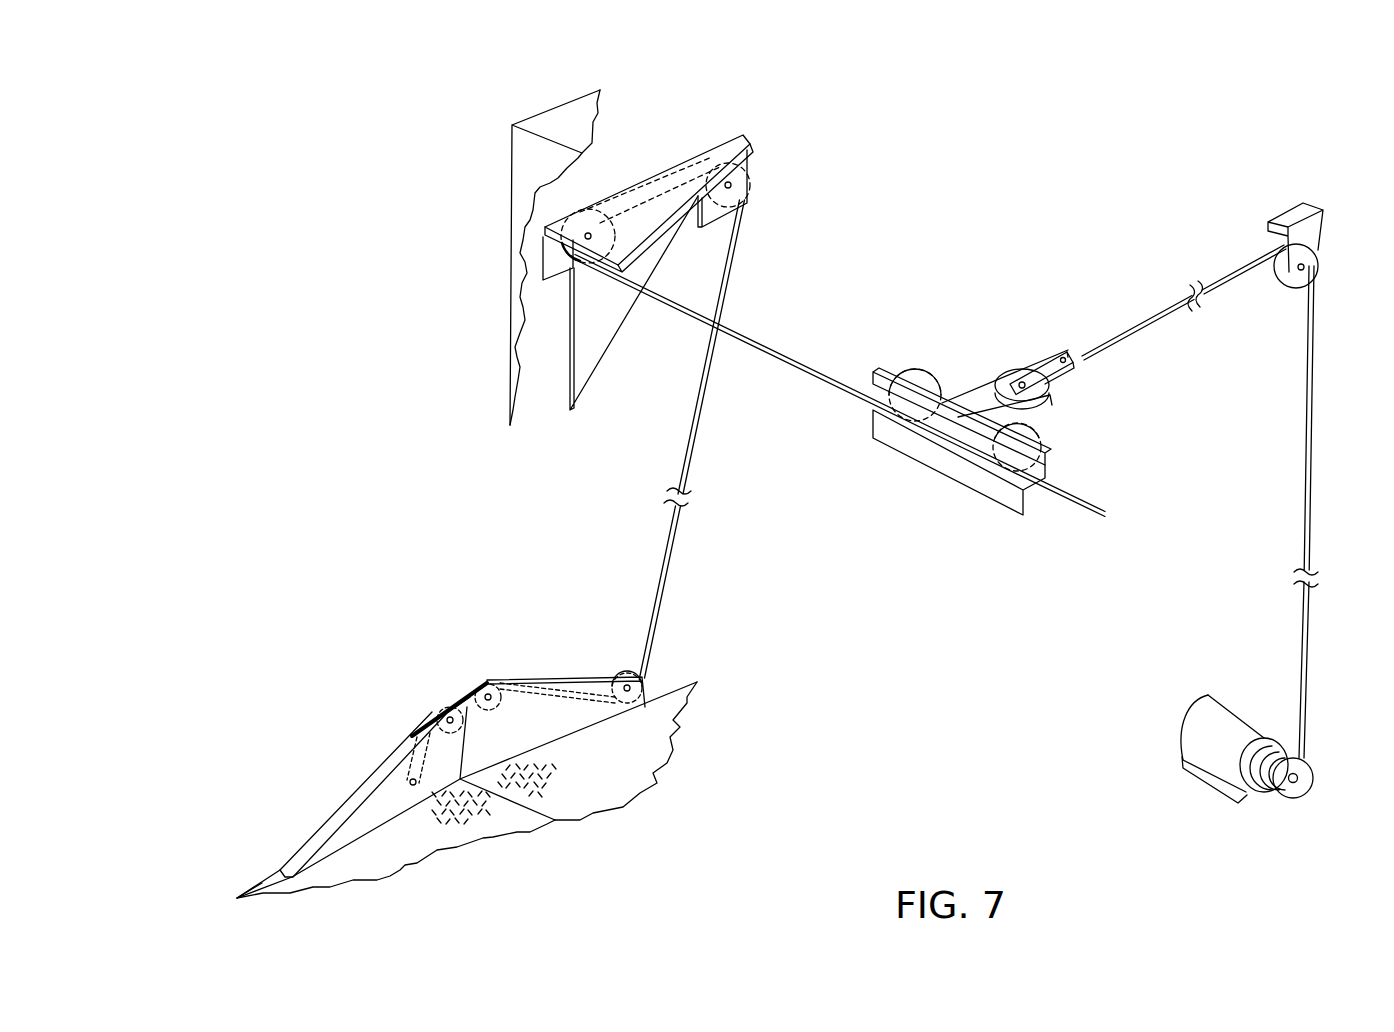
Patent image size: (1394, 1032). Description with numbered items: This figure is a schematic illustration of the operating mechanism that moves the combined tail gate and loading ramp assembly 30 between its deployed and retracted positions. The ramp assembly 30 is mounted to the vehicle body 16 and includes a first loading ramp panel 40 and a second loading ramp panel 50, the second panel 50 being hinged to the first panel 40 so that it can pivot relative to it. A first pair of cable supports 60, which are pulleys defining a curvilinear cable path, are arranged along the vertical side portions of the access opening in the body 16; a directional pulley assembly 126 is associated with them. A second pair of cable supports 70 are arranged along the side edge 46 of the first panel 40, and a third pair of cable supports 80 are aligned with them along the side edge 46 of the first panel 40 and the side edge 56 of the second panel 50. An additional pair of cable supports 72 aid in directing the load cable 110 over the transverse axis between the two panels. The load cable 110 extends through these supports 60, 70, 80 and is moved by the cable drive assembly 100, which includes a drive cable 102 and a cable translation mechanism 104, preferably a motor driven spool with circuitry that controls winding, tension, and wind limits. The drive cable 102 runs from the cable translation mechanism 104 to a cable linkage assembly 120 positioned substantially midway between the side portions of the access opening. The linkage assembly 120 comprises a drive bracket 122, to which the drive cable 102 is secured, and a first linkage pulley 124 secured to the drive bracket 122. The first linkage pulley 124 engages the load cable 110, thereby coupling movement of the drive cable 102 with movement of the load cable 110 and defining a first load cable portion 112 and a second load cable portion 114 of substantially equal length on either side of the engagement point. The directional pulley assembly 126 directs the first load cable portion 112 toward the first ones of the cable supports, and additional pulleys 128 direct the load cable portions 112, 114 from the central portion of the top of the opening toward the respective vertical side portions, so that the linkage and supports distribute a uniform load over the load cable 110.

The vehicle body 16 is at (512, 125).
The loading ramp assembly 30 is at (463, 763).
The first loading ramp panel 40 is at (653, 770).
The first side edge 46 is at (687, 682).
The second loading ramp panel 50 is at (377, 867).
The third side edge 56 is at (267, 882).
The first pair of cable supports 60 is at (742, 135).
The second pair of cable supports 70 is at (572, 681).
The additional pair of cable supports 72 is at (480, 683).
The third pair of cable supports 80 is at (352, 799).
The cable drive assembly 100 is at (1226, 503).
The drive cable 102 is at (1315, 420).
The cable translation mechanism 104 is at (1226, 697).
The load cable 110 is at (992, 414).
The first load cable portion 112 is at (772, 350).
The second load cable portion 114 is at (1088, 505).
The cable linkage assembly 120 is at (1078, 318).
The drive bracket 122 is at (1050, 362).
The first linkage pulley 124 is at (1050, 396).
The first directional pulley assembly 126 is at (720, 245).
The additional pulleys 128 is at (916, 377).